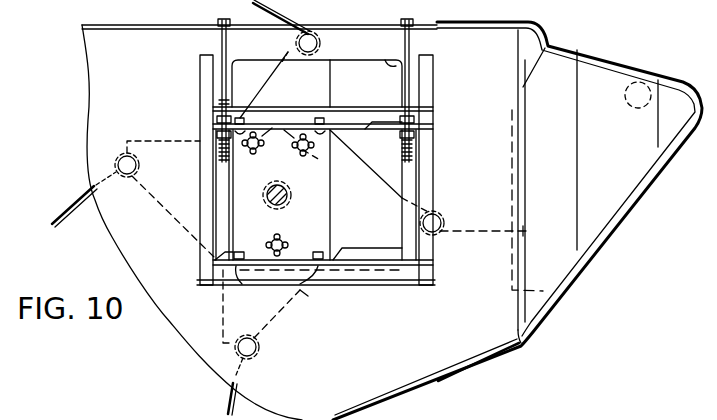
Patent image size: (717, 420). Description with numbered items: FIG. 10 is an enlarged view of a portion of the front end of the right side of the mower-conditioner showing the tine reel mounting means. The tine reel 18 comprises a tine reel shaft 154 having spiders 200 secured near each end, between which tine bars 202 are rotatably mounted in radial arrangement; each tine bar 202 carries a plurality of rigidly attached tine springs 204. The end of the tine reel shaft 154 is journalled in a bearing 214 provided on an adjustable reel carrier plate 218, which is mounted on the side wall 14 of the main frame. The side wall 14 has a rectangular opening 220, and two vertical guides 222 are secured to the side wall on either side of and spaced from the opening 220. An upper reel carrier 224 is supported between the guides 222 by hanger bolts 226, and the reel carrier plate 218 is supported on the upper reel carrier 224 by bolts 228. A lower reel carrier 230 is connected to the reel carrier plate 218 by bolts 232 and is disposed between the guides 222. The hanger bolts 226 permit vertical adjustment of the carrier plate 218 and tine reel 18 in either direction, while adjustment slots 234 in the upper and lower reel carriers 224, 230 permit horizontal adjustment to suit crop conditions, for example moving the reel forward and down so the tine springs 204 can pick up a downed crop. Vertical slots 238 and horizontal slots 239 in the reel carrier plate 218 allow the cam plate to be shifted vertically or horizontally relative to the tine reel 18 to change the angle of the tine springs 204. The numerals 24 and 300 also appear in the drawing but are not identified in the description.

The side wall 14 is at (484, 145).
The tine reel 18 is at (304, 292).
The member 24 is at (87, 414).
The tine reel shaft 154 is at (289, 188).
The spiders 200 is at (176, 227).
The tine bars 202 is at (141, 165).
The tine springs 204 is at (70, 202).
The bearing 214 is at (270, 206).
The reel carrier plate 218 is at (264, 183).
The rectangular opening 220 is at (402, 62).
The vertical guides 222 is at (201, 85).
The upper reel carrier 224 is at (370, 110).
The hanger bolts 226 is at (220, 42).
The bolts 228 is at (318, 120).
The lower reel carrier 230 is at (395, 284).
The bolts 232 is at (277, 286).
The adjustment slots 234 is at (367, 133).
The vertical slots 238 is at (316, 160).
The horizontal slots 239 is at (283, 192).
The assembly 300 is at (26, 412).